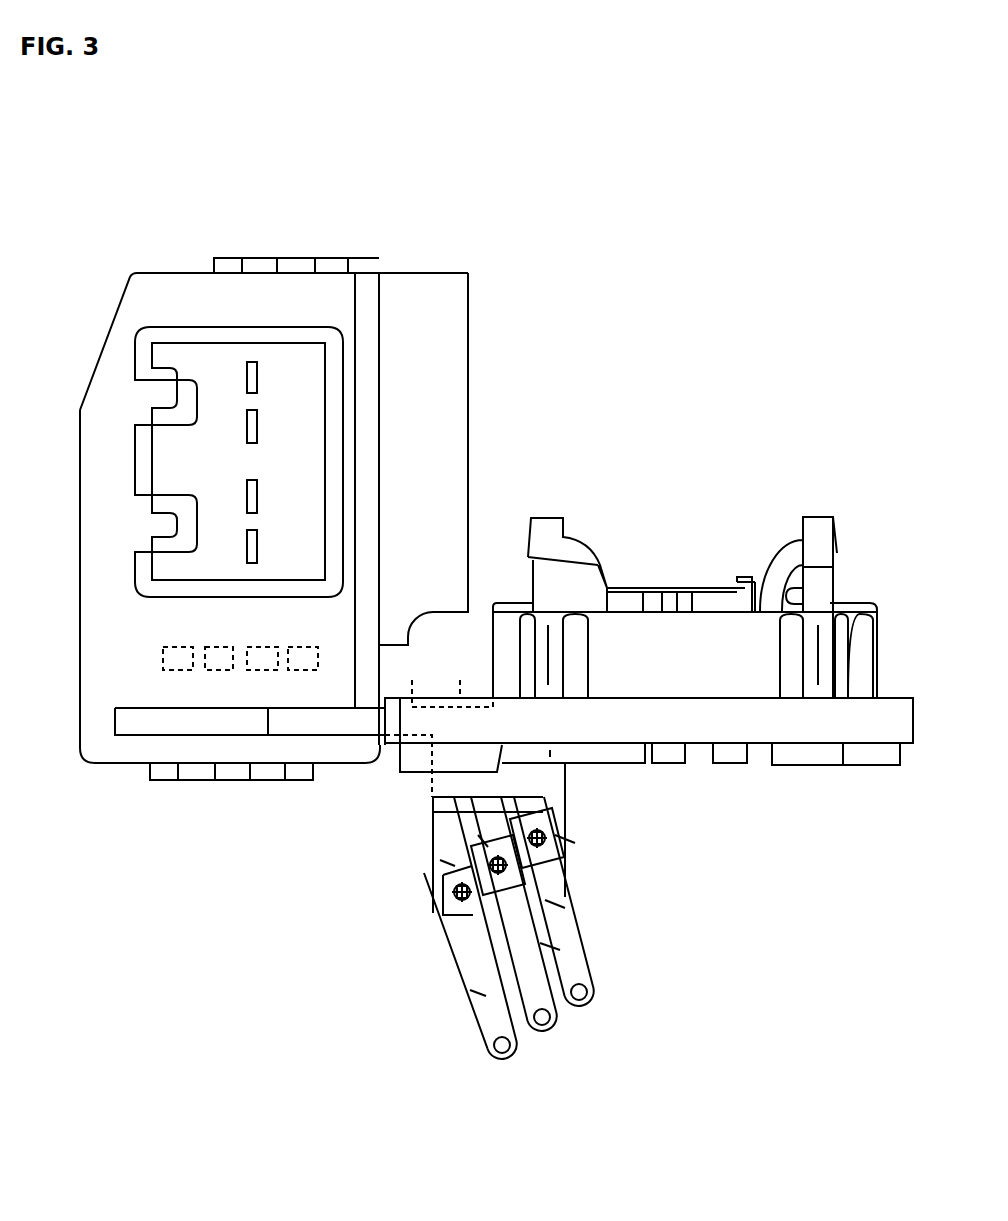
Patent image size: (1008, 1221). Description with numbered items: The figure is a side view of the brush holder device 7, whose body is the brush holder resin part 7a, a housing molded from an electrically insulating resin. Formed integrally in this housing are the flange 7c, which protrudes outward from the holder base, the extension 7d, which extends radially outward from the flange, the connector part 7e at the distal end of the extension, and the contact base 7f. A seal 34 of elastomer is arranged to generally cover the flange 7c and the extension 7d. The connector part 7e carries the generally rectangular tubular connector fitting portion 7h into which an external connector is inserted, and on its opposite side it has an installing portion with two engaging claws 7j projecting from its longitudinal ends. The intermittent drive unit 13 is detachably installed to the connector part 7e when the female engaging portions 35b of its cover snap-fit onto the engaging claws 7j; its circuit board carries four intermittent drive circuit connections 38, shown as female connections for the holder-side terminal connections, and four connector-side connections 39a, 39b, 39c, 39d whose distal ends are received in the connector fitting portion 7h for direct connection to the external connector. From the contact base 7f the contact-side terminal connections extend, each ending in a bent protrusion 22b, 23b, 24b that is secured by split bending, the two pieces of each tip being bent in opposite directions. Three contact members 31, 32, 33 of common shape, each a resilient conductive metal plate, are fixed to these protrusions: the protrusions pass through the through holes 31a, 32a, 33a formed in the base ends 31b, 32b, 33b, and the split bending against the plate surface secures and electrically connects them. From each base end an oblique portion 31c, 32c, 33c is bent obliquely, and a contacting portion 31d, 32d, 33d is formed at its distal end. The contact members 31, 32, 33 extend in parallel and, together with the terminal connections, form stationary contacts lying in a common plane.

The brush holder device 7 is at (858, 543).
The brush holder resin part 7a is at (877, 622).
The flange 7c is at (429, 726).
The extension 7d is at (445, 680).
The connector part 7e is at (95, 672).
The contact base 7f is at (565, 768).
The connector fitting portion 7h is at (197, 327).
The engaging claws 7j is at (270, 270).
The intermittent drive unit 13 is at (407, 273).
The protrusion 22b is at (543, 823).
The protrusion 23b is at (482, 867).
The protrusion 24b is at (440, 905).
The contact member 31 is at (575, 922).
The through hole 31a is at (547, 843).
The base end 31b is at (560, 850).
The oblique portion 31c is at (563, 907).
The contacting portion 31d is at (582, 997).
The contact member 32 is at (540, 947).
The through hole 32a is at (547, 875).
The base end 32b is at (478, 835).
The oblique portion 32c is at (573, 965).
The contacting portion 32d is at (543, 1027).
The contact member 33 is at (466, 967).
The through hole 33a is at (452, 890).
The base end 33b is at (445, 862).
The oblique portion 33c is at (485, 995).
The contacting portion 33d is at (493, 1047).
The seal 34 is at (760, 735).
The female engaging portions 35b is at (308, 262).
The intermittent drive circuit connections 38 is at (178, 647).
The connector-side connection 39a is at (257, 382).
The connector-side connection 39b is at (257, 430).
The connector-side connection 39c is at (257, 502).
The connector-side connection 39d is at (257, 552).